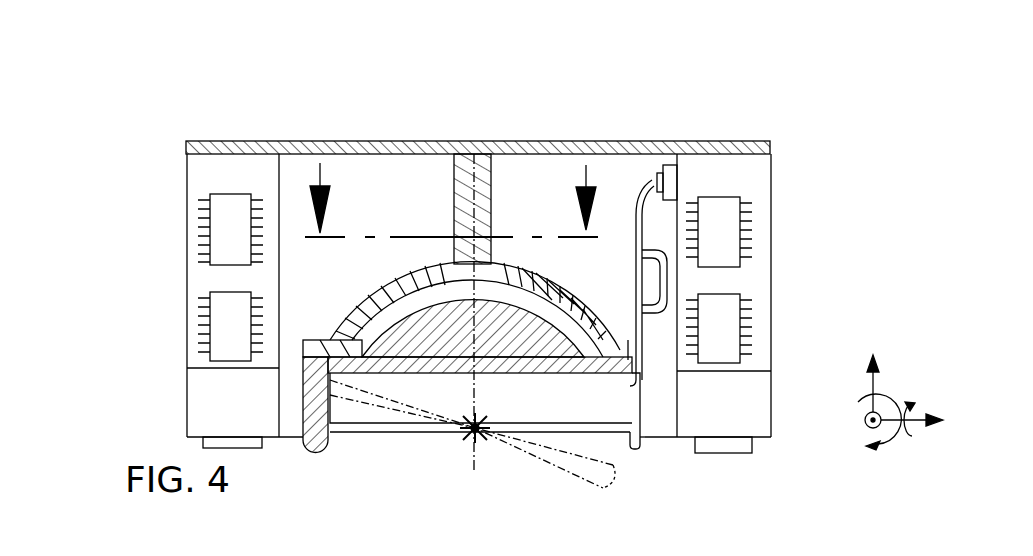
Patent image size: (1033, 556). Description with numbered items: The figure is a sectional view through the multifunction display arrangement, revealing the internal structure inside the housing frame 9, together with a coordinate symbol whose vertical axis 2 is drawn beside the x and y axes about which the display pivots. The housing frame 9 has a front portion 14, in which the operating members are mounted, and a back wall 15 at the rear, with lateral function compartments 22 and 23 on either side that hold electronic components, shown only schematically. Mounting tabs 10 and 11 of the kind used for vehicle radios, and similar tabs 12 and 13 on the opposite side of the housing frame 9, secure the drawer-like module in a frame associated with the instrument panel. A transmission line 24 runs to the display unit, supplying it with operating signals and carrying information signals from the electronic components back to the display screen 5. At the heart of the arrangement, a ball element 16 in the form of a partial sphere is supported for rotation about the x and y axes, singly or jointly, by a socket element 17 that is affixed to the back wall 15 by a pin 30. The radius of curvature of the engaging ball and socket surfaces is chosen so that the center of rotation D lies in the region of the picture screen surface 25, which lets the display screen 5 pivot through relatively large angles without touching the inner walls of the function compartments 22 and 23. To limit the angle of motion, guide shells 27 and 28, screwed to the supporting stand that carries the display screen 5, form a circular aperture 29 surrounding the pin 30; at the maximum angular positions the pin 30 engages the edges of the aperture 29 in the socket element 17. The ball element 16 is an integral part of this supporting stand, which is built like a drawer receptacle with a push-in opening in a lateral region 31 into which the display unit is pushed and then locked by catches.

The display screen 5 is at (620, 465).
The housing frame 9 is at (504, 231).
The tab 10 is at (778, 170).
The tab 11 is at (835, 223).
The tab 12 is at (148, 279).
The tab 13 is at (168, 198).
The front portion 14 is at (284, 462).
The back wall 15 is at (612, 151).
The ball element 16 is at (457, 327).
The socket element 17 is at (537, 300).
The function compartment 22 is at (757, 273).
The function compartment 23 is at (200, 278).
The transmission line 24 is at (650, 182).
The picture screen surface 25 is at (388, 428).
The guide shell 27 is at (438, 183).
The guide shell 28 is at (438, 183).
The circular aperture 29 is at (503, 270).
The pin 30 is at (464, 163).
The lateral region 31 is at (645, 395).
The center of rotation D is at (460, 443).
The z axis 2 is at (897, 396).